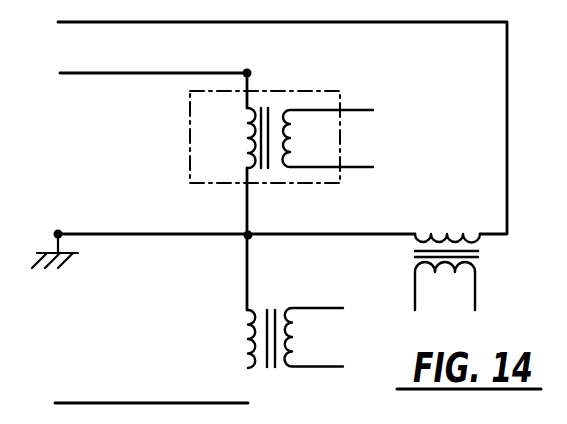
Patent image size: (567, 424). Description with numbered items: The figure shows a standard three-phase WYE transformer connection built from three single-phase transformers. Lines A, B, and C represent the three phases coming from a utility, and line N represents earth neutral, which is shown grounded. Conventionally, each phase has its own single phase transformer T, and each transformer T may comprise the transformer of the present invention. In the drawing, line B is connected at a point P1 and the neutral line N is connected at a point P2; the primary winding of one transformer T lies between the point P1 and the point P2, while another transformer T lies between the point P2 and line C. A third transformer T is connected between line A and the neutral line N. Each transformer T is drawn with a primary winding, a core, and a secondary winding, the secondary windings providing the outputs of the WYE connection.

The phase line A is at (264, 121).
The phase line B is at (134, 73).
The phase line C is at (140, 403).
The neutral line N is at (218, 241).
The first connection point P1 is at (242, 75).
The second connection point P2 is at (229, 239).
The single phase transformer T is at (338, 91).